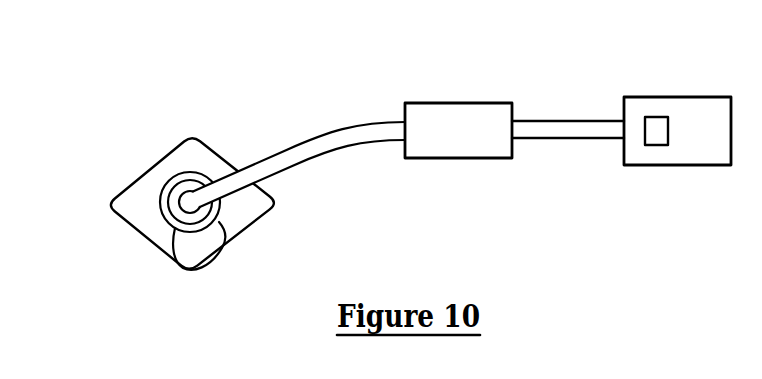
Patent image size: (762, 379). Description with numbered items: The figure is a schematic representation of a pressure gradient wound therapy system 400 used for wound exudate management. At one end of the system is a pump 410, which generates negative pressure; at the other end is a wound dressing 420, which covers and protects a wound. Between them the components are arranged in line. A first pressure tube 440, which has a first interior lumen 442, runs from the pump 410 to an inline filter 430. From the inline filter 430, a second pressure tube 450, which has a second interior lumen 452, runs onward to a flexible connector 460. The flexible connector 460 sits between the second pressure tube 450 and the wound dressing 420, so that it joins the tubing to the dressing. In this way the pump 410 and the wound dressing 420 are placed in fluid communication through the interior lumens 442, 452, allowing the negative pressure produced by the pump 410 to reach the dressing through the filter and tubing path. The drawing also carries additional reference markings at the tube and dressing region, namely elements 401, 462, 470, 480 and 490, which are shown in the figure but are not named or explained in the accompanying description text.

The pressure gradient wound therapy system 400 is at (147, 50).
The pump 410 is at (672, 78).
The wound dressing 420 is at (100, 165).
The inline filter 430 is at (449, 74).
The first pressure tube 440 is at (577, 104).
The first interior lumen 442 is at (553, 140).
The second pressure tube 450 is at (327, 105).
The second interior lumen 452 is at (313, 148).
The lumen 401 is at (398, 141).
The flexible connector 460 is at (182, 263).
The ring 462 is at (186, 180).
The port 470 is at (172, 205).
The outer ring 480 is at (229, 221).
The button 490 is at (650, 146).